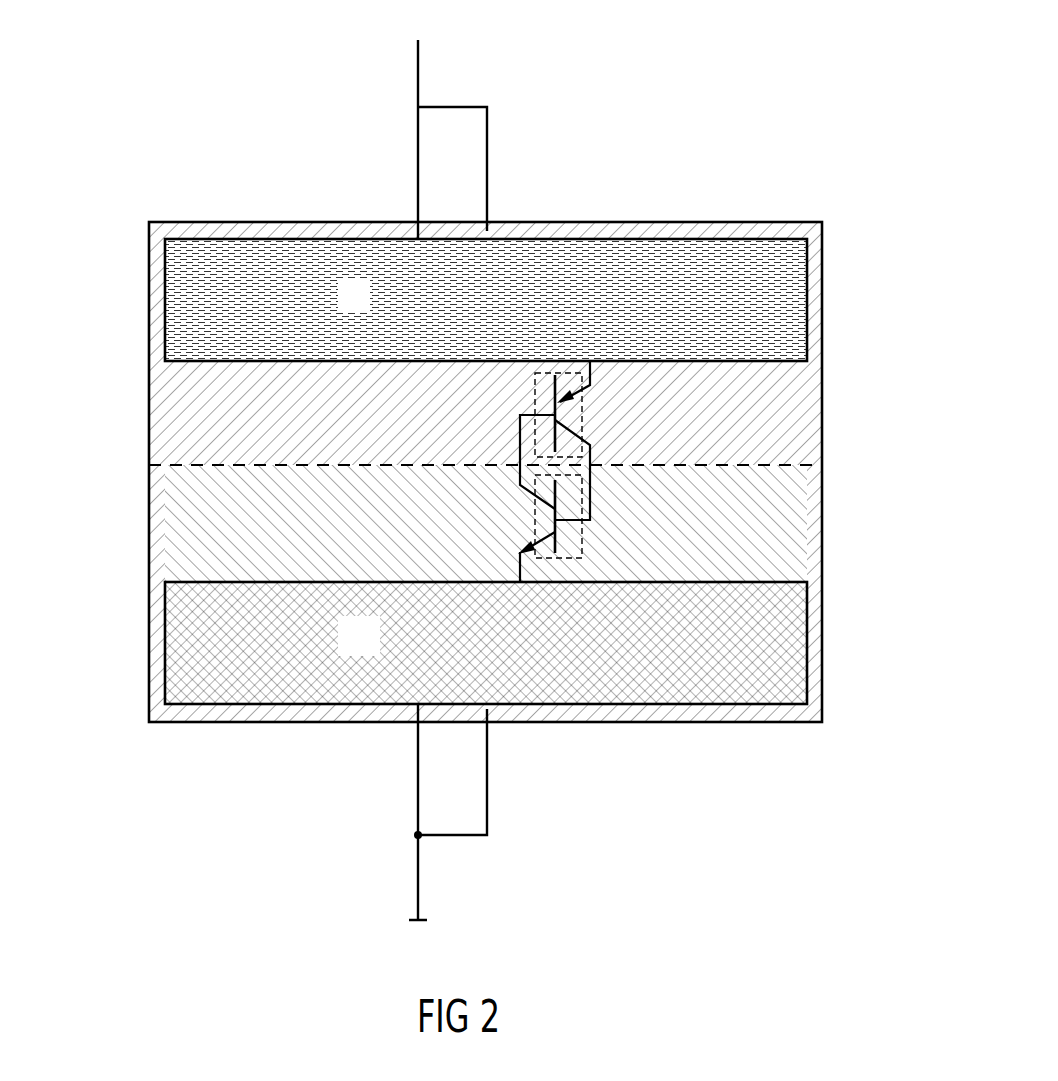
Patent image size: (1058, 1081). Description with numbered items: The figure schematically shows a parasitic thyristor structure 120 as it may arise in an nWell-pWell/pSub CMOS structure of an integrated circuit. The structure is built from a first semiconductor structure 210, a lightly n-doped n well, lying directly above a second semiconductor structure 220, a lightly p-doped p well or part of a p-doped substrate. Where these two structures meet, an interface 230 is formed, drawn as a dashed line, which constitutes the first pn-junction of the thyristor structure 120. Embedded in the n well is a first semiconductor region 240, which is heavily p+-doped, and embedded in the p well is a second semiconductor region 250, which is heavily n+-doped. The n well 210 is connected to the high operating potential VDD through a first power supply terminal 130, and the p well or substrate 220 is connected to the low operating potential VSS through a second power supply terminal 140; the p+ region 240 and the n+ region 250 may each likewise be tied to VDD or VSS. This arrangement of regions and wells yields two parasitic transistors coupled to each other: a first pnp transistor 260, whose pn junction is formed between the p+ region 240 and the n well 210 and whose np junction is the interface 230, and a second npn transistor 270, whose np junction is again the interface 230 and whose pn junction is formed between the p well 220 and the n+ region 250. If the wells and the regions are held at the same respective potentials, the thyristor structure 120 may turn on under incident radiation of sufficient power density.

The thyristor structure 120 is at (797, 82).
The first power supply terminal 130 is at (420, 66).
The second power supply terminal 140 is at (420, 858).
The first semiconductor structure 210 is at (167, 399).
The second semiconductor structure 220 is at (167, 527).
The interface 230 is at (823, 463).
The first semiconductor region 240 is at (167, 299).
The second semiconductor region 250 is at (167, 642).
The first pnp transistor 260 is at (598, 393).
The second transistor 270 is at (588, 553).